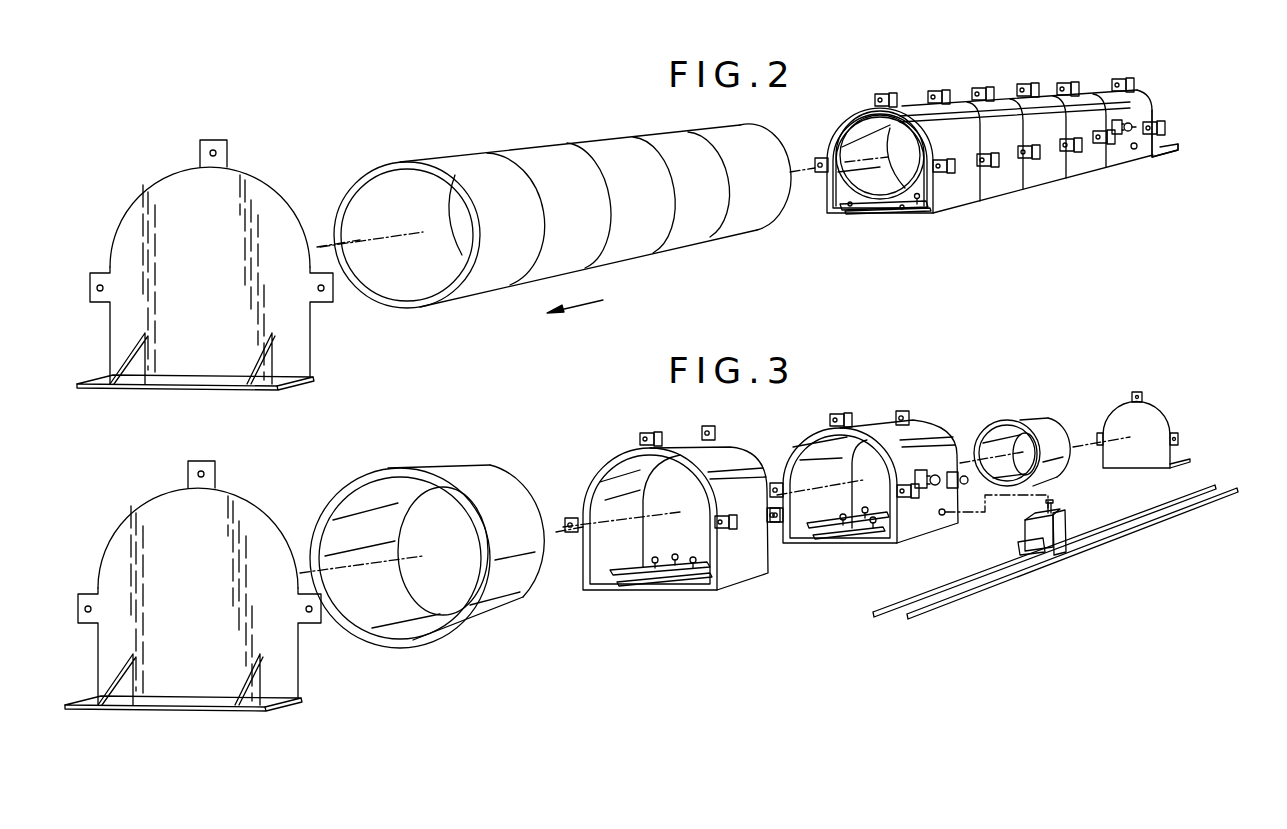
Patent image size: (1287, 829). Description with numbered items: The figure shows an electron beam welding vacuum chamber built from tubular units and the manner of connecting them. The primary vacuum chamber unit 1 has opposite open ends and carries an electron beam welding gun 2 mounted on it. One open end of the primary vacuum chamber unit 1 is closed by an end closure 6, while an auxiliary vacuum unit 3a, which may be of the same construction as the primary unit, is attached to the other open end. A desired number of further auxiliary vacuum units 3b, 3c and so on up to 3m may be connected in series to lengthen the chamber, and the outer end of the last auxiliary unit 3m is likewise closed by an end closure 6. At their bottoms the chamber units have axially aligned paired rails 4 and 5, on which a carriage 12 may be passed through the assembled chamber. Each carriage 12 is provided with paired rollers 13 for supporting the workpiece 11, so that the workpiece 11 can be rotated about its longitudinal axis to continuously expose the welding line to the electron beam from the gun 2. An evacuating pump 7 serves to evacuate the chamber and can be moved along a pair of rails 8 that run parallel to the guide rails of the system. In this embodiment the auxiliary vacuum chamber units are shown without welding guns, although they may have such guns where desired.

In FIG. 2, the primary vacuum chamber unit 1 is at (1130, 95).
In FIG. 3, the primary vacuum chamber unit 1 is at (893, 433).
In FIG. 2, the electron beam welding gun 2 is at (1117, 140).
In FIG. 3, the electron beam welding gun 2 is at (925, 470).
In FIG. 2, the auxiliary vacuum unit 3a is at (1057, 103).
In FIG. 3, the auxiliary vacuum unit 3a is at (742, 573).
In FIG. 2, the auxiliary vacuum unit 3b is at (1010, 103).
In FIG. 2, the auxiliary vacuum unit 3c is at (970, 105).
In FIG. 2, the auxiliary vacuum unit 3m is at (915, 108).
In FIG. 3, the rail 4 is at (870, 530).
In FIG. 2, the rail 5 is at (903, 212).
In FIG. 3, the rail 5 is at (682, 588).
In FIG. 2, the end closure 6 is at (265, 198).
In FIG. 3, the end closure 6 is at (252, 522).
In FIG. 3, the evacuating pump 7 is at (1050, 552).
In FIG. 3, the rails 8 is at (995, 575).
In FIG. 2, the workpiece 11 is at (640, 126).
In FIG. 3, the workpiece 11 is at (457, 472).
In FIG. 2, the carriage 12 is at (850, 214).
In FIG. 3, the carriage 12 is at (630, 587).
In FIG. 2, the rollers 13 is at (920, 198).
In FIG. 3, the rollers 13 is at (650, 563).